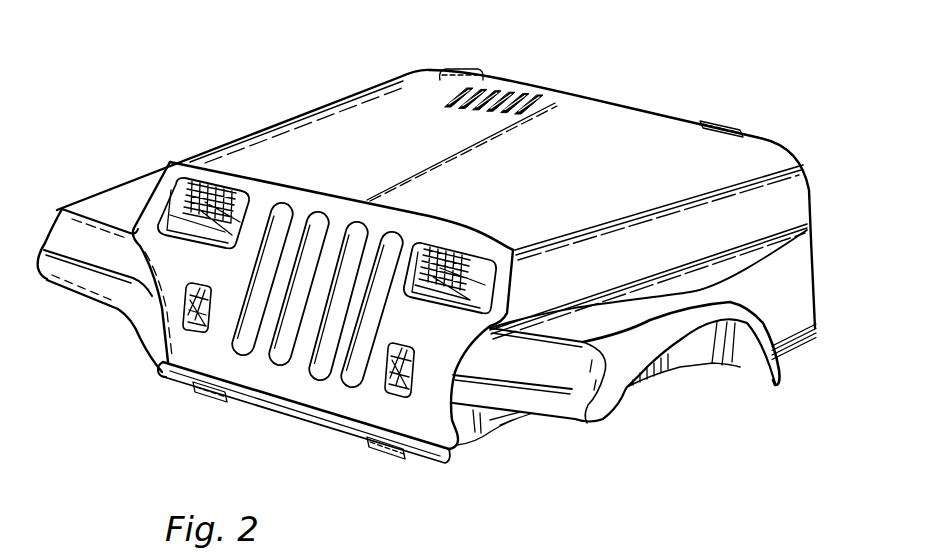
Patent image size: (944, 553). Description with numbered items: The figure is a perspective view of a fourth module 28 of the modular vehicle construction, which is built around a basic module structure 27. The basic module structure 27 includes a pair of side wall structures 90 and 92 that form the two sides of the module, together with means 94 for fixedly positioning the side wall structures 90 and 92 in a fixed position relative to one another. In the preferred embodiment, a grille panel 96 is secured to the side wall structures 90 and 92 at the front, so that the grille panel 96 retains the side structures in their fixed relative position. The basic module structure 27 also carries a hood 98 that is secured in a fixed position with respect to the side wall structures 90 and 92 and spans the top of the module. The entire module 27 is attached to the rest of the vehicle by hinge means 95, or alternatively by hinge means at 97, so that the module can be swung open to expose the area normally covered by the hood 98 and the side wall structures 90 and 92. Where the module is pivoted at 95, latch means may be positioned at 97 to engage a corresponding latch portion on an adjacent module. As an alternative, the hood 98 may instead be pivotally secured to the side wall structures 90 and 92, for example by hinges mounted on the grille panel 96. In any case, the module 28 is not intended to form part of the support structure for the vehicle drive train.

The basic module structure 27 is at (358, 95).
The fourth module 28 is at (586, 66).
The side wall structure 90 is at (110, 192).
The side wall structure 92 is at (765, 302).
The means for fixedly positioning side structures 94 is at (445, 463).
The hinge means 95 is at (222, 403).
The grille panel 96 is at (200, 350).
The alternative hinge means / latch means location 97 is at (713, 121).
The hood 98 is at (617, 120).